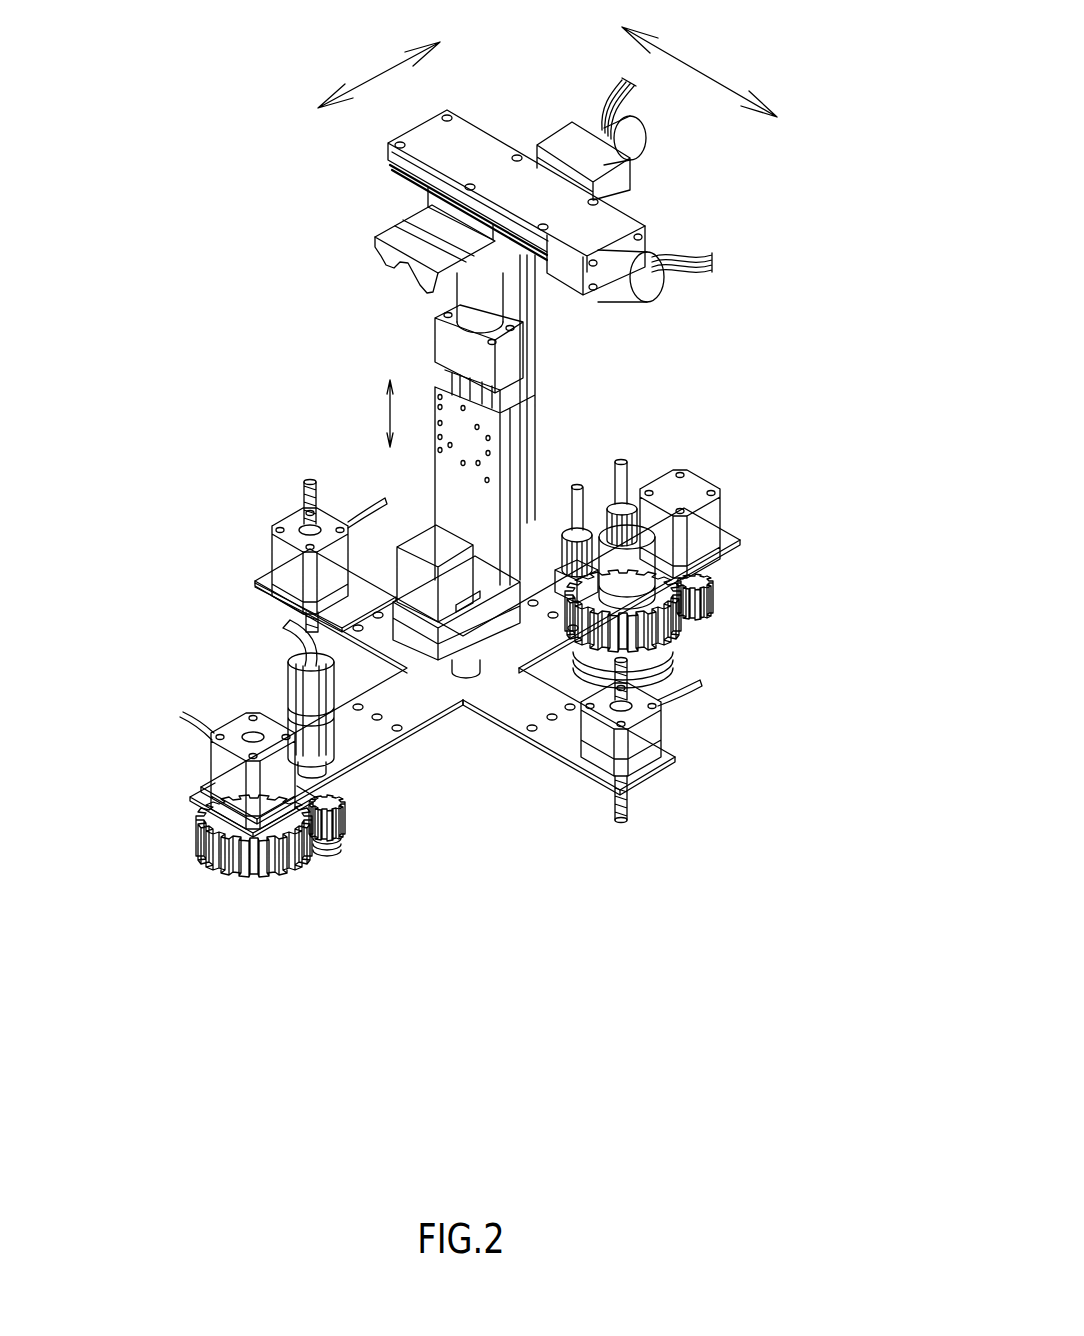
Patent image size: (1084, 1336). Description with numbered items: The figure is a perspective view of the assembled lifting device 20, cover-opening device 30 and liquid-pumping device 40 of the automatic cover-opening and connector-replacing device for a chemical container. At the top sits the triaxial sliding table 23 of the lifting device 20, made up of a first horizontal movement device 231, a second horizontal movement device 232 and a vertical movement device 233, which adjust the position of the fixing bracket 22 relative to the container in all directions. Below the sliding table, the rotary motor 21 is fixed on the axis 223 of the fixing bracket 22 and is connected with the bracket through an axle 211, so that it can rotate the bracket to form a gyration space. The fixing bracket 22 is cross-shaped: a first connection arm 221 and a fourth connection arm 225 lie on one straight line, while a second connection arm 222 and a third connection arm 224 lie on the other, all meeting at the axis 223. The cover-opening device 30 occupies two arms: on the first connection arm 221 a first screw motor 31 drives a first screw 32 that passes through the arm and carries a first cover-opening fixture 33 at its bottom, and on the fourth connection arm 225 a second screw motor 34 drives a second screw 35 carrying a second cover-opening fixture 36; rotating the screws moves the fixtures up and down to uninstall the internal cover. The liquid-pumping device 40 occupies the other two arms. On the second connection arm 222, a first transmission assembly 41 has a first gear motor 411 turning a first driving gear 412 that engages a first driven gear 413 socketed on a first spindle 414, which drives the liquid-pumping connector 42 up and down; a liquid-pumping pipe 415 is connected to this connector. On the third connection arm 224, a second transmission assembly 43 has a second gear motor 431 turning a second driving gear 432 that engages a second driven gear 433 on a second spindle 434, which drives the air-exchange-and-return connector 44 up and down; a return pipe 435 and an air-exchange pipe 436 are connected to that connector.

The lifting device 20 is at (758, 331).
The rotary motor 21 is at (580, 435).
The axle 211 is at (488, 672).
The fixing bracket 22 is at (536, 666).
The first connection arm 221 is at (568, 750).
The second connection arm 222 is at (347, 760).
The axis 223 is at (463, 690).
The third connection arm 224 is at (710, 617).
The fourth connection arm 225 is at (362, 590).
The triaxial sliding table 23 is at (672, 317).
The first horizontal movement device 231 is at (487, 155).
The second horizontal movement device 232 is at (410, 235).
The vertical movement device 233 is at (437, 545).
The cover-opening device 30 is at (463, 655).
The first screw motor 31 is at (645, 745).
The first screw 32 is at (665, 710).
The first cover-opening fixture 33 is at (625, 822).
The second screw motor 34 is at (290, 523).
The second screw 35 is at (312, 487).
The second cover-opening fixture 36 is at (300, 622).
The liquid-pumping device 40 is at (252, 832).
The first transmission assembly 41 is at (197, 851).
The first gear motor 411 is at (218, 777).
The first driving gear 412 is at (217, 832).
The first driven gear 413 is at (332, 838).
The first spindle 414 is at (322, 747).
The liquid-pumping pipe 415 is at (300, 635).
The liquid-pumping connector 42 is at (287, 805).
The second transmission assembly 43 is at (709, 553).
The second gear motor 431 is at (690, 490).
The second driving gear 432 is at (712, 593).
The second driven gear 433 is at (648, 637).
The second spindle 434 is at (627, 593).
The return pipe 435 is at (617, 482).
The air-exchange pipe 436 is at (573, 506).
The air-exchange-and-return connector 44 is at (685, 557).